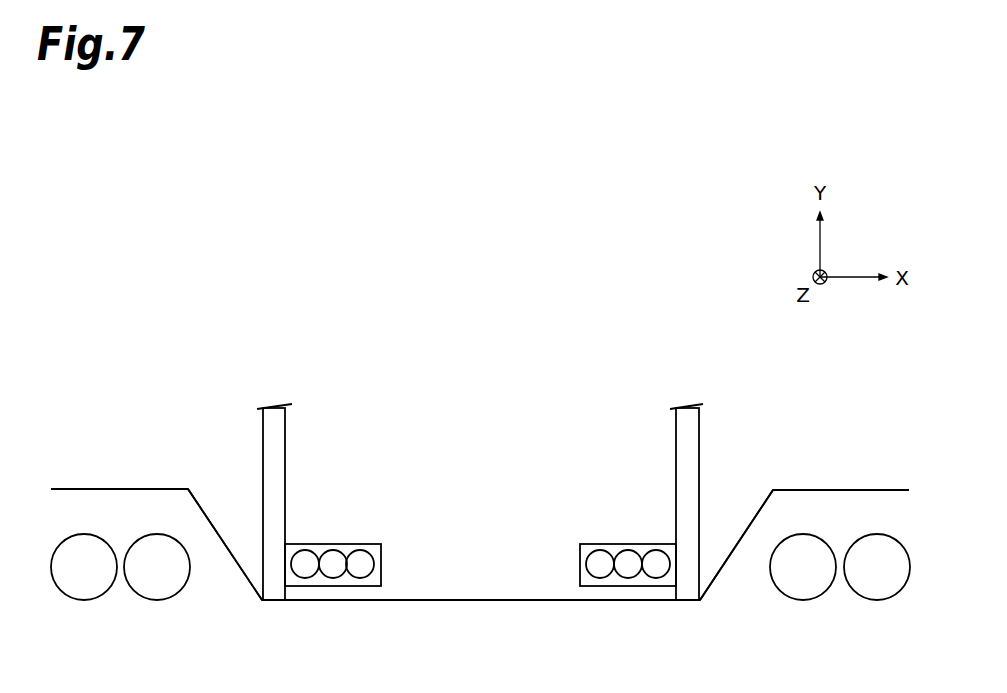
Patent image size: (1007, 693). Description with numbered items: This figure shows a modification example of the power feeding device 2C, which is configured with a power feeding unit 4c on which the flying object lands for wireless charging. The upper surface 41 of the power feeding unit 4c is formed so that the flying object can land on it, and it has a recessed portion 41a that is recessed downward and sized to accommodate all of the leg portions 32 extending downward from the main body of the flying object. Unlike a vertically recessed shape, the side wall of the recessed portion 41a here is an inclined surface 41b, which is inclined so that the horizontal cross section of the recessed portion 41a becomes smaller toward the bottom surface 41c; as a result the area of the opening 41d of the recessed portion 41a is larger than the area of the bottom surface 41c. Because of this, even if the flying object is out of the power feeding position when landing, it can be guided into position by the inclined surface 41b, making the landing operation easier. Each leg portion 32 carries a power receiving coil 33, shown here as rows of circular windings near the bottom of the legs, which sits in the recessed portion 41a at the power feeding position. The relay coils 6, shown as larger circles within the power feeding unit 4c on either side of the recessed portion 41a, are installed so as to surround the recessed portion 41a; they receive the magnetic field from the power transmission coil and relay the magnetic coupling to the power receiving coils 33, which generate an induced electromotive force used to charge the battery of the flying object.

The power feeding device 2C is at (610, 340).
The power feeding unit 4c is at (104, 481).
The relay coil 6 is at (84, 600).
The leg portion 32 is at (262, 433).
The power receiving coil 33 is at (330, 545).
The upper surface 41 is at (849, 490).
The recessed portion 41a is at (532, 506).
The inclined surface 41b is at (213, 524).
The bottom surface 41c is at (475, 600).
The opening 41d is at (190, 488).